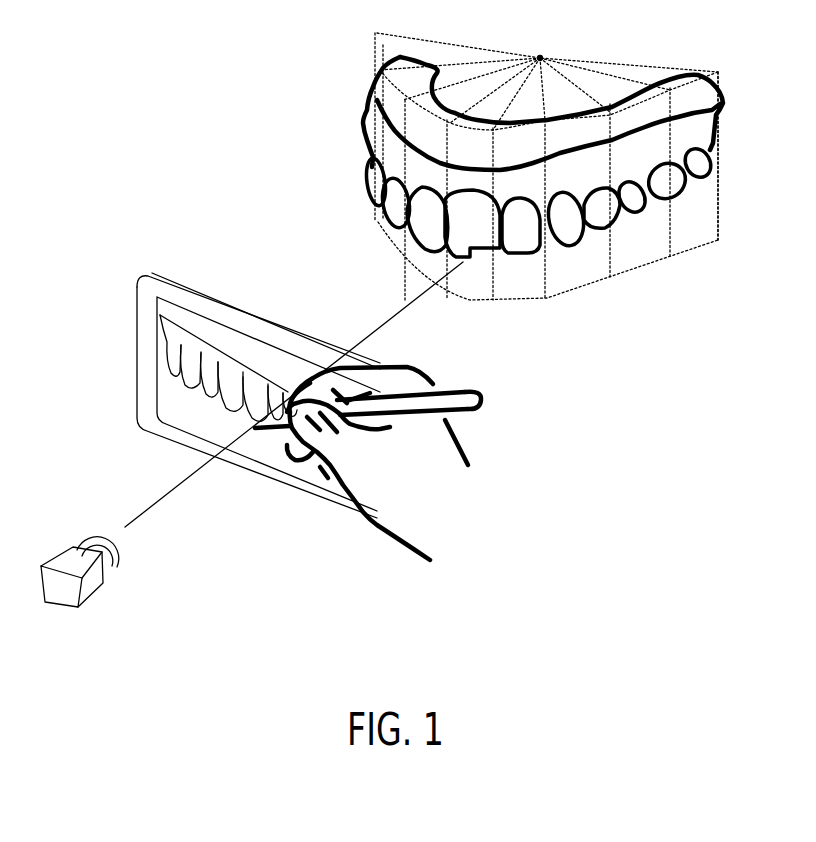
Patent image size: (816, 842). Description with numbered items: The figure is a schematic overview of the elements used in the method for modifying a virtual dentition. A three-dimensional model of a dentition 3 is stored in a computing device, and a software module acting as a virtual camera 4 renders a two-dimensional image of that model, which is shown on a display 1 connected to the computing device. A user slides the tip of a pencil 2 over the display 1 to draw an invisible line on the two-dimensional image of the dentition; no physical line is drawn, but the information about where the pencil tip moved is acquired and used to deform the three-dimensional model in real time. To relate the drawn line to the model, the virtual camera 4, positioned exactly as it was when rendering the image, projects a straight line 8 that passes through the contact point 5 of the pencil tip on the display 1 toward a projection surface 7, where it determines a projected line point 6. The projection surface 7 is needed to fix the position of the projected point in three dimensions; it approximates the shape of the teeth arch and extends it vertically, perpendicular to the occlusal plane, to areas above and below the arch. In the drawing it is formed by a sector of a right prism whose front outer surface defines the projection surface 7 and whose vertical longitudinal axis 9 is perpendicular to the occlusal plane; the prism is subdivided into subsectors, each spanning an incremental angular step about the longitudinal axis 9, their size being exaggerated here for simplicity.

The display 1 is at (156, 396).
The input device / stylus 2 is at (409, 421).
The three-dimensional model of a dentition 3 is at (361, 130).
The virtual camera 4 is at (99, 589).
The contact point 5 is at (252, 435).
The projected line point 6 is at (465, 262).
The projection surface 7 is at (711, 246).
The straight line 8 is at (153, 504).
The longitudinal axis 9 is at (544, 56).